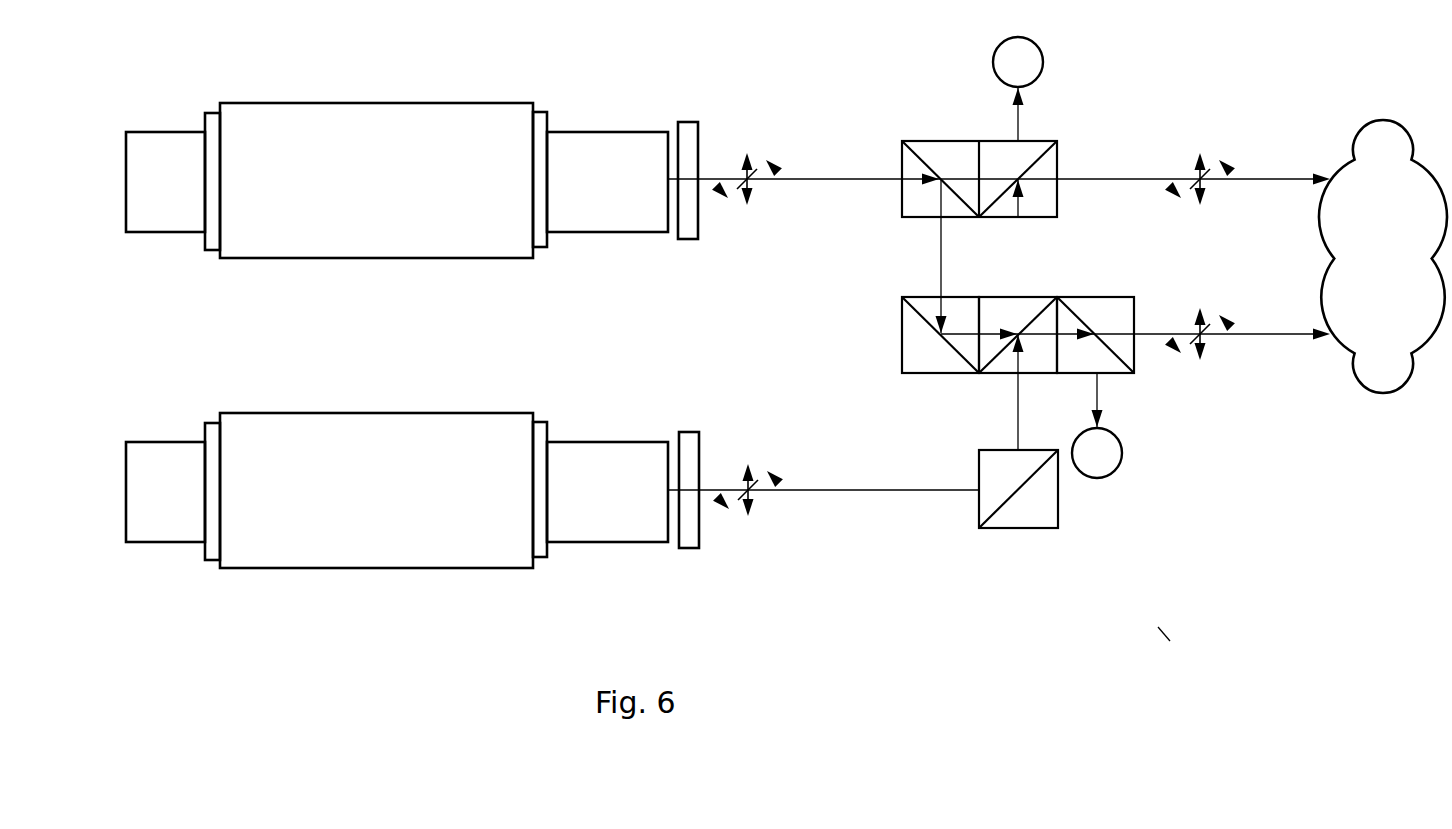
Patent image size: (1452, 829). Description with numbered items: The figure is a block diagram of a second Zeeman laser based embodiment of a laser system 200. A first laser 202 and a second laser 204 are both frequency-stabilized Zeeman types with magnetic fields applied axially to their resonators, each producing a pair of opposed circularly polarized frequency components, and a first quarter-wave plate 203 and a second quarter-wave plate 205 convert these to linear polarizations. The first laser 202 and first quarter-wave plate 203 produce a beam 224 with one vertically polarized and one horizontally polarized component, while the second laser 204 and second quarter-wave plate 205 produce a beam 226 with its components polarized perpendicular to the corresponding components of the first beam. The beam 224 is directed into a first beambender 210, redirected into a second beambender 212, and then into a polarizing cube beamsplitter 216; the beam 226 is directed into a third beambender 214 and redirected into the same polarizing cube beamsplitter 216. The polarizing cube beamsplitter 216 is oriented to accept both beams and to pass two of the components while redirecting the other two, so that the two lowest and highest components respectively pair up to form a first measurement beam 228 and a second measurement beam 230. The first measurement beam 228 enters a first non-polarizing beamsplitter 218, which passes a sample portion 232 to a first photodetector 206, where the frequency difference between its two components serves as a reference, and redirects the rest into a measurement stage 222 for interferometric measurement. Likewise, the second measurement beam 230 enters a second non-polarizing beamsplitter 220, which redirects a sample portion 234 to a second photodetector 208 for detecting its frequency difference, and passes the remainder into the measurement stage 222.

The laser system 200 is at (1170, 641).
The first laser 202 is at (397, 180).
The first quarter-wave plate 203 is at (690, 239).
The second laser 204 is at (397, 490).
The second quarter-wave plate 205 is at (690, 548).
The first photodetector 206 is at (1018, 62).
The second photodetector 208 is at (1097, 453).
The first beambender 210 is at (960, 158).
The second beambender 212 is at (920, 356).
The third beambender 214 is at (1020, 508).
The polarizing cube beamsplitter 216 is at (1008, 363).
The first non-polarizing beamsplitter 218 is at (1038, 197).
The second non-polarizing beamsplitter 220 is at (1097, 313).
The measurement stage 222 is at (1383, 256).
The beam 224 is at (812, 179).
The beam 226 is at (834, 490).
The first measurement beam 228 is at (1268, 179).
The second measurement beam 230 is at (1268, 334).
The sample portion 232 is at (1018, 120).
The sample portion 234 is at (1098, 393).